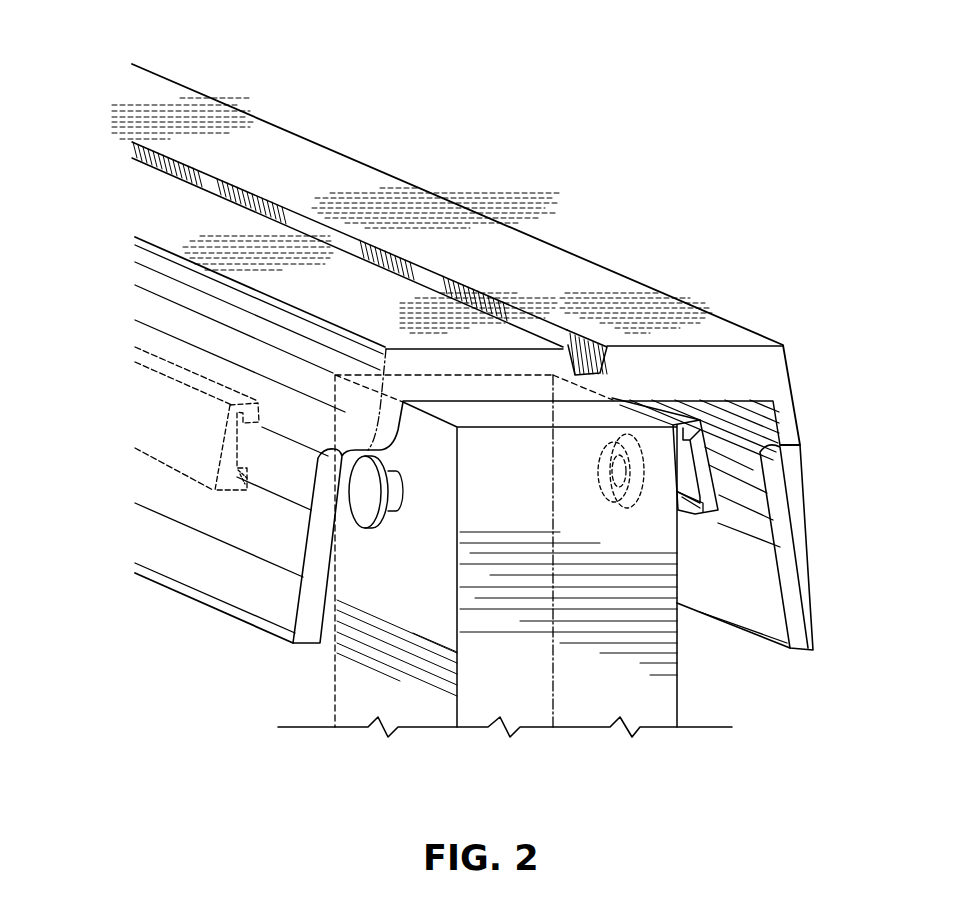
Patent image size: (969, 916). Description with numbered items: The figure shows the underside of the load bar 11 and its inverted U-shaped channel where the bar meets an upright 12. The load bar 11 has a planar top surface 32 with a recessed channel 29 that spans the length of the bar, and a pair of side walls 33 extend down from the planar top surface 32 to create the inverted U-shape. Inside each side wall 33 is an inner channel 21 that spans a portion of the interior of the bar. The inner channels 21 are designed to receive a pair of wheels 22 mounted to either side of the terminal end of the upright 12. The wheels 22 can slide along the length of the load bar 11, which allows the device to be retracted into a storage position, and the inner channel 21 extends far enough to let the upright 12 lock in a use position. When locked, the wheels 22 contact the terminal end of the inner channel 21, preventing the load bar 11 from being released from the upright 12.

The load bar 11 is at (494, 152).
The upright 12 is at (687, 688).
The inner channel 21 is at (215, 420).
The wheel 22 is at (643, 503).
The recessed channel 29 is at (583, 338).
The planar top surface 32 is at (665, 323).
The side wall 33 is at (793, 517).